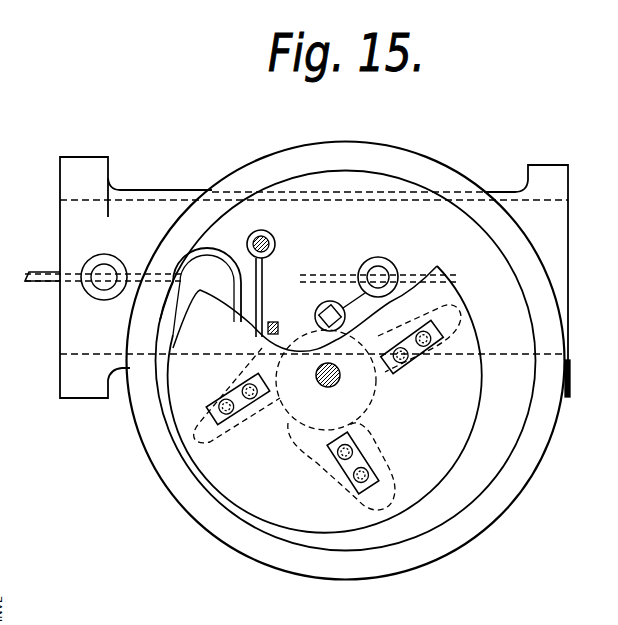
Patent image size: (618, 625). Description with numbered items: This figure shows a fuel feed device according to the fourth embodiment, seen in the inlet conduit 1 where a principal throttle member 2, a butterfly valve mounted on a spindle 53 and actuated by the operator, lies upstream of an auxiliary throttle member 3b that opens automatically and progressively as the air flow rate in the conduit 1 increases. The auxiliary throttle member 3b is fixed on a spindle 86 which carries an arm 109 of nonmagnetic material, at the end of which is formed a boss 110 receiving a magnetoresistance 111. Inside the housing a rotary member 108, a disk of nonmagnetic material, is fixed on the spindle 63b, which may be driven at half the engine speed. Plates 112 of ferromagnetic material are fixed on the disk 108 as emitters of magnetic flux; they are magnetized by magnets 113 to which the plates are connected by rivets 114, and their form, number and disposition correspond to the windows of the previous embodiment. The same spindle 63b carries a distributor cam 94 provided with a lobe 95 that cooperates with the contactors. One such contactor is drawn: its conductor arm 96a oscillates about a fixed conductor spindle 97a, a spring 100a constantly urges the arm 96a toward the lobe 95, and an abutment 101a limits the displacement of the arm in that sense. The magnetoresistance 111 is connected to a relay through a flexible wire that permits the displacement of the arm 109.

The inlet conduit 1 is at (535, 202).
The principal throttle member 2 is at (42, 283).
The spindle 53 is at (104, 287).
The spring 100a is at (213, 250).
The fixed conductor spindle 97a is at (265, 238).
The conductor arm 96a is at (255, 285).
The boss 110 is at (322, 304).
The arm 109 is at (352, 293).
The spindle 86 is at (380, 272).
The auxiliary throttle member 3b is at (435, 265).
The abutment 101a is at (281, 317).
The magnetoresistance 111 is at (345, 318).
The lobe 95 is at (326, 380).
The cam 94 is at (333, 340).
The spindle 63b is at (328, 388).
The rotary member 108 is at (463, 417).
The plates 112 is at (338, 482).
The magnets 113 is at (360, 462).
The rivets 114 is at (367, 474).